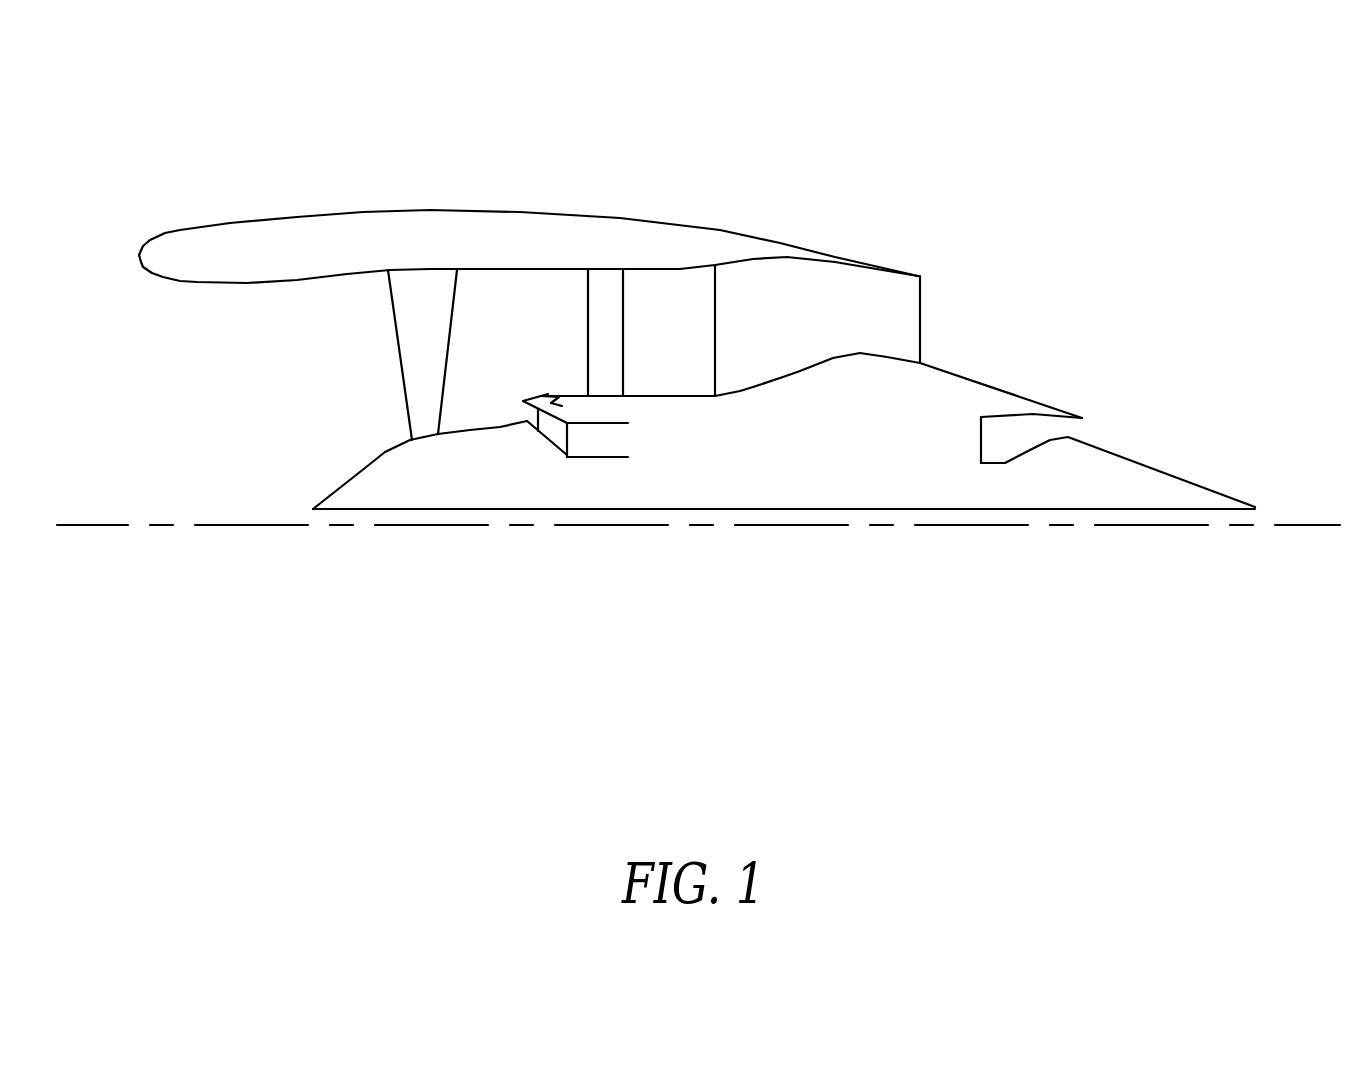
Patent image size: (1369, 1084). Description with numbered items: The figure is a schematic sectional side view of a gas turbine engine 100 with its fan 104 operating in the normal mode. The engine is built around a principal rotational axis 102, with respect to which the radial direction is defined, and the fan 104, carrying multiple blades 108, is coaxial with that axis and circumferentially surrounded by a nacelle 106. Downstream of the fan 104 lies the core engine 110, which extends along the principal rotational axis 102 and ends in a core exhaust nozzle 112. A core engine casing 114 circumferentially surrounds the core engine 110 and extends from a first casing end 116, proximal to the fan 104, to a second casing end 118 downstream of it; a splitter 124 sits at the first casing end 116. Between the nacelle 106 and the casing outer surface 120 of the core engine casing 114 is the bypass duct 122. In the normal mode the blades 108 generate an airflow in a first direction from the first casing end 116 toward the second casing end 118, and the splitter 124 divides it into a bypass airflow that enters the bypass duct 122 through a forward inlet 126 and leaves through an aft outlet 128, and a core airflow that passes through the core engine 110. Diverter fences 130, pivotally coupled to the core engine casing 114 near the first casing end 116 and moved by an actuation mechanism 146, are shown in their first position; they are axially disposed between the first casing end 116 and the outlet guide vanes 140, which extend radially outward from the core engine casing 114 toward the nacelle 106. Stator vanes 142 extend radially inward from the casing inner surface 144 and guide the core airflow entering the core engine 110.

The gas turbine engine 100 is at (1050, 120).
The principal rotational axis 102 is at (105, 524).
The fan 104 is at (386, 437).
The nacelle 106 is at (376, 210).
The blades 108 is at (398, 295).
The core engine 110 is at (762, 462).
The core exhaust nozzle 112 is at (1088, 428).
The core engine casing 114 is at (754, 389).
The first casing end 116 is at (517, 401).
The second casing end 118 is at (1084, 413).
The casing outer surface 120 is at (686, 394).
The bypass duct 122 is at (874, 307).
The splitter 124 is at (524, 400).
The forward inlet 126 is at (528, 323).
The aft outlet 128 is at (914, 278).
The diverter fences 130 is at (548, 394).
The outlet guide vanes 140 is at (618, 370).
The stator vanes 142 is at (553, 442).
The casing inner surface 144 is at (528, 430).
The actuation mechanism 146 is at (548, 404).